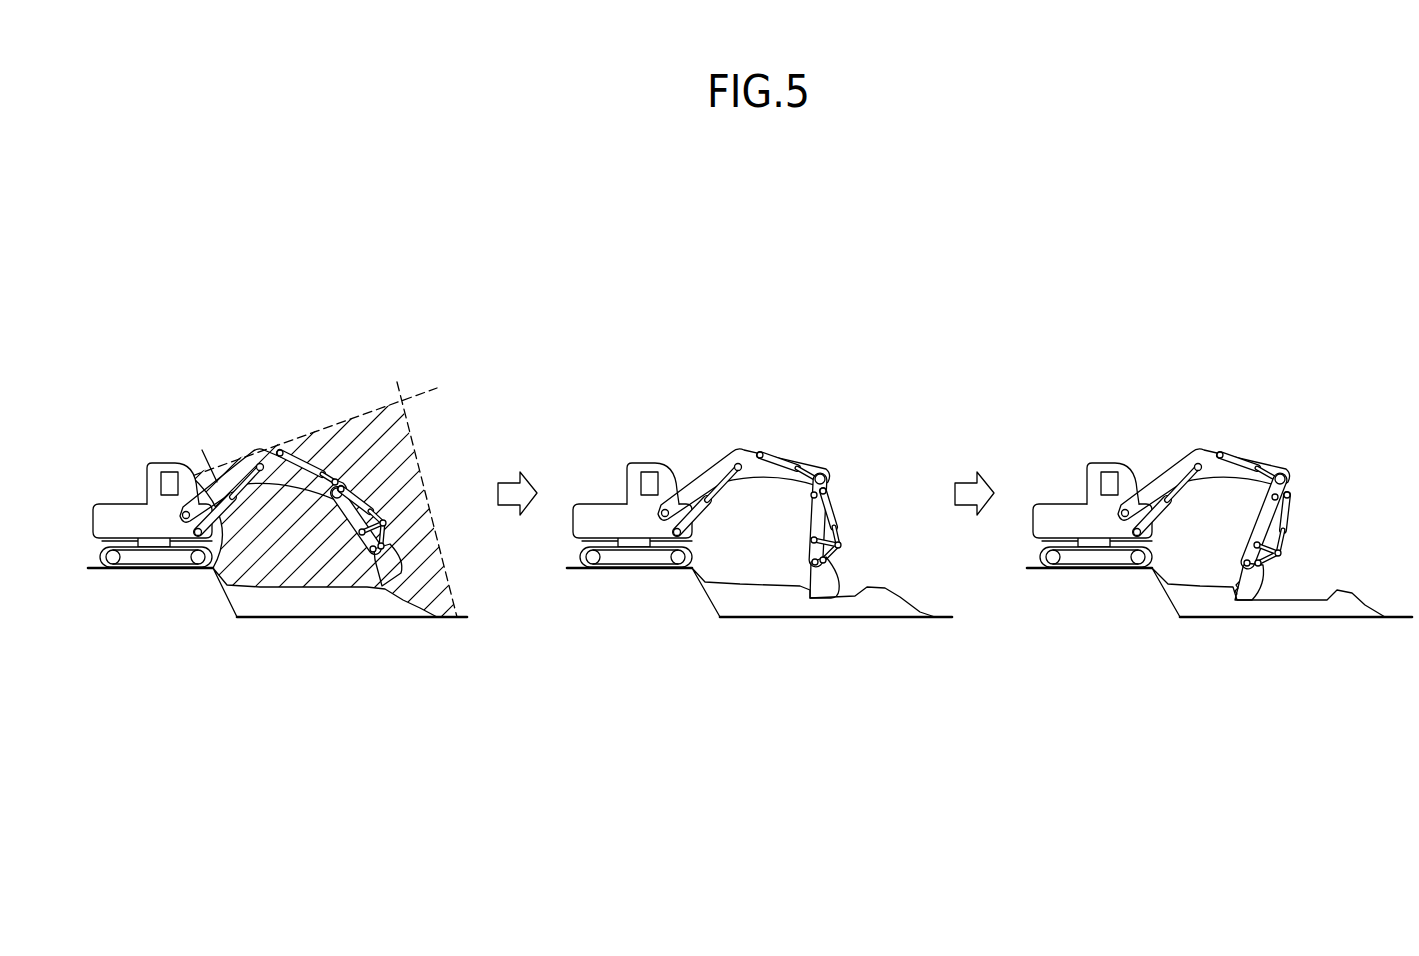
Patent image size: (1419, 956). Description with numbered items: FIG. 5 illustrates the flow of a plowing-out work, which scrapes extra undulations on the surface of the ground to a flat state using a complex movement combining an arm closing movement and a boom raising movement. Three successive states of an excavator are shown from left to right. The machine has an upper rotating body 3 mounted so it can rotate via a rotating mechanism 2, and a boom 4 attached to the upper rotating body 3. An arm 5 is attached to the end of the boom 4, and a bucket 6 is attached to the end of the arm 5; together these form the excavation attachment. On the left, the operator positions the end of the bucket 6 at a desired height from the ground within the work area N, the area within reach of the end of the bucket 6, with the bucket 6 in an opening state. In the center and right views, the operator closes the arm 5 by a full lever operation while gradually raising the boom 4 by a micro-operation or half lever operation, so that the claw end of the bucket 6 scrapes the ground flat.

The rotating mechanism 2 is at (176, 540).
The upper rotating body 3 is at (125, 503).
The boom 4 is at (301, 487).
The arm 5 is at (357, 503).
The bucket 6 is at (390, 554).
The work area N is at (340, 568).